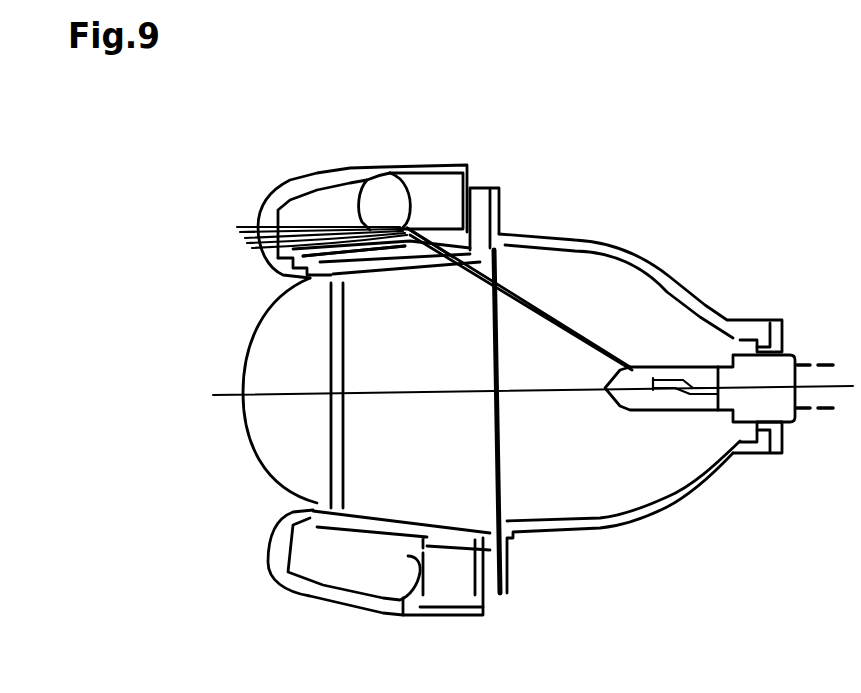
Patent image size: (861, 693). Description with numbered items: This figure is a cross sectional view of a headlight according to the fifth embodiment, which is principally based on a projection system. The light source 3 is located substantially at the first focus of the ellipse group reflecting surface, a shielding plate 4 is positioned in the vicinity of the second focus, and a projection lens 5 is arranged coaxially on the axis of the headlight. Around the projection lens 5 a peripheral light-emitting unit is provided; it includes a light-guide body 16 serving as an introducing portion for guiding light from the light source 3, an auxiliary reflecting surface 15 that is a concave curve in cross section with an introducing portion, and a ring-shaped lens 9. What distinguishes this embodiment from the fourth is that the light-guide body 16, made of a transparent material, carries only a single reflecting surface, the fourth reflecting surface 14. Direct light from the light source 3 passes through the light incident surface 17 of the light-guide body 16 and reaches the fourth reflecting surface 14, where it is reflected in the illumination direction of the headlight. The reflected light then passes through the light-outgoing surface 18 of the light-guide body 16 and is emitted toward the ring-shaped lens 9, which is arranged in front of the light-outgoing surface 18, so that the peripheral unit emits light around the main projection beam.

The light source 3 is at (663, 392).
The shielding plate 4 is at (492, 470).
The projection lens 5 is at (280, 357).
The ring-shaped lens 9 is at (268, 215).
The fourth reflecting surface 14 is at (423, 229).
The auxiliary reflecting surface 15 is at (360, 195).
The light-guide body 16 is at (400, 232).
The light incident surface 17 is at (437, 237).
The light-outgoing surface 18 is at (393, 228).